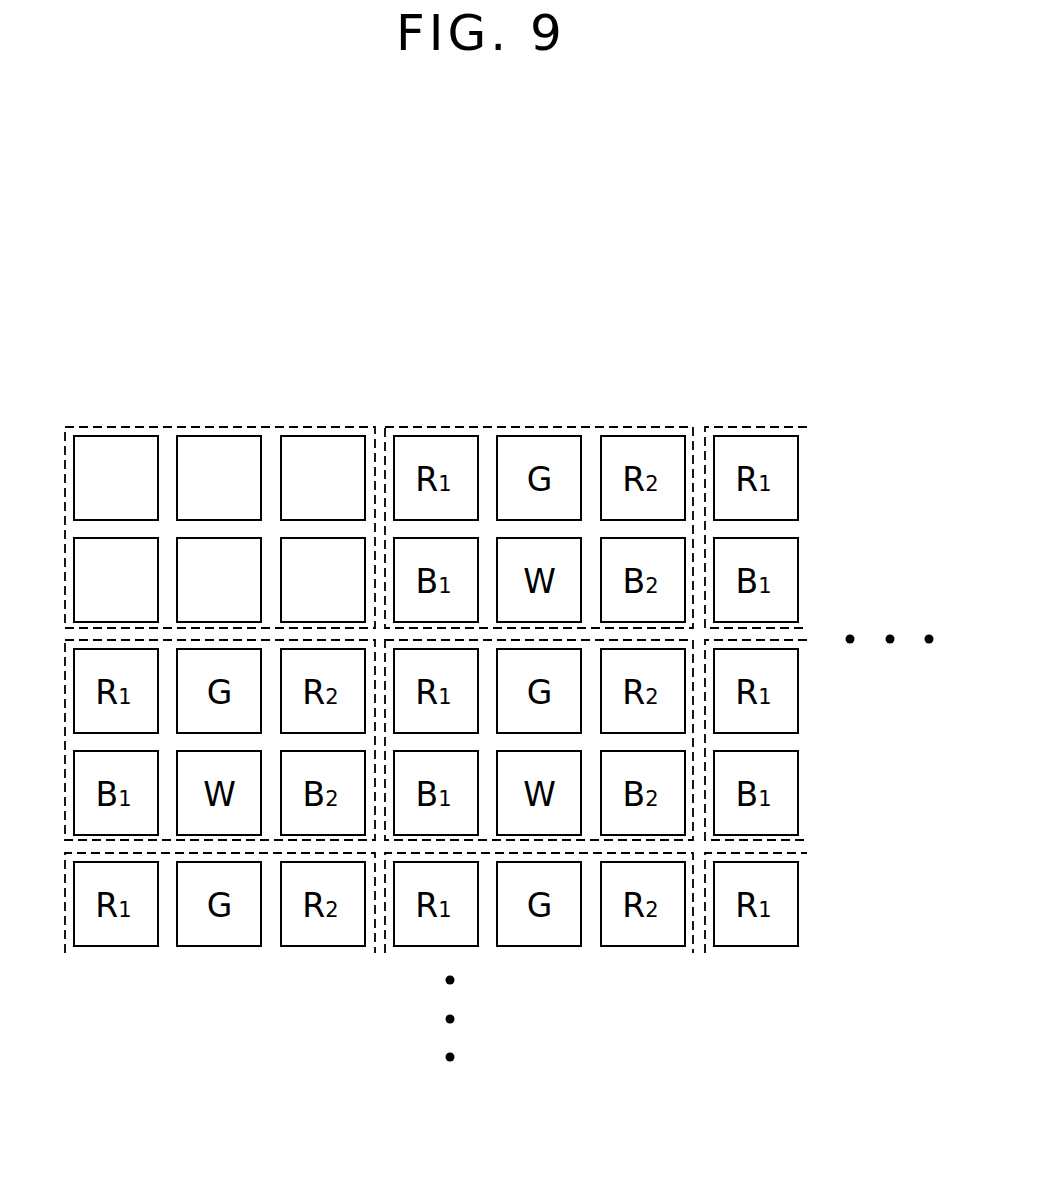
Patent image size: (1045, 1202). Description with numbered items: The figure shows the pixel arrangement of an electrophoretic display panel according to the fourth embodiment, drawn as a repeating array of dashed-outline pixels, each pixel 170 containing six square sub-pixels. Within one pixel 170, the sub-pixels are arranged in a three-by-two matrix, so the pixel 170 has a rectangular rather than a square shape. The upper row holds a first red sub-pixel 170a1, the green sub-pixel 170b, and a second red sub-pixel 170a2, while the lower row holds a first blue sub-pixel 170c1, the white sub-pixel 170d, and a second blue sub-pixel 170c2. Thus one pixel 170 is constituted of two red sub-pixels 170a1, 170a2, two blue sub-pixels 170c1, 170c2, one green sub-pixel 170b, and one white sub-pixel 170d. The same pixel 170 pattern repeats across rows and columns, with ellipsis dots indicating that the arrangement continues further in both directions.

The pixel 170 is at (190, 318).
The red sub-pixel 170a1 is at (115, 436).
The red sub-pixel 170a2 is at (333, 436).
The green sub-pixel 170b is at (236, 436).
The blue sub-pixel 170c1 is at (65, 583).
The blue sub-pixel 170c2 is at (280, 568).
The white sub-pixel 170d is at (176, 568).